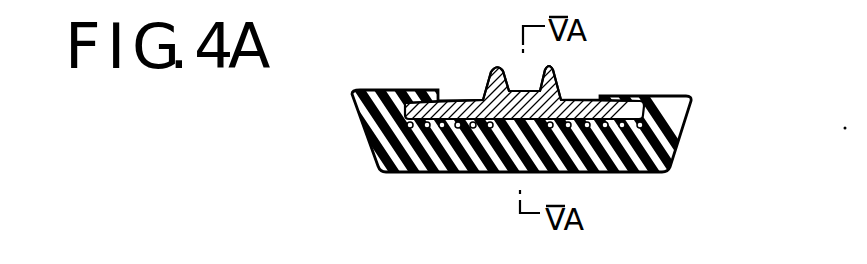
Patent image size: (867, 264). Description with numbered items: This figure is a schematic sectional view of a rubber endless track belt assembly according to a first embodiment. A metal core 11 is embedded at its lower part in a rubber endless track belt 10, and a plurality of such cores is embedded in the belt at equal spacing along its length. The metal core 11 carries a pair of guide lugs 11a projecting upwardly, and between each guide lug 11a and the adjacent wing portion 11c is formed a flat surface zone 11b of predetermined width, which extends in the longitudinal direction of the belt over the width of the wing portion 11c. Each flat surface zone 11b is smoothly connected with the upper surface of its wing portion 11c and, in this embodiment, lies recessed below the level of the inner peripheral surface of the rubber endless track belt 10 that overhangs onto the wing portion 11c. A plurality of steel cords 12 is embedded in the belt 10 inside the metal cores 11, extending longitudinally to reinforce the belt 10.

The rubber endless track belt 10 is at (373, 90).
The metal core 11 is at (596, 87).
The guide lug 11a is at (497, 66).
The flat surface zone 11b is at (463, 100).
The wing portion 11c is at (437, 93).
The steel cord 12 is at (490, 128).